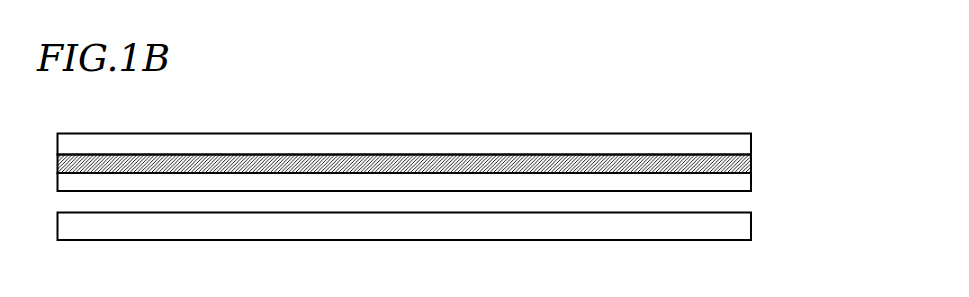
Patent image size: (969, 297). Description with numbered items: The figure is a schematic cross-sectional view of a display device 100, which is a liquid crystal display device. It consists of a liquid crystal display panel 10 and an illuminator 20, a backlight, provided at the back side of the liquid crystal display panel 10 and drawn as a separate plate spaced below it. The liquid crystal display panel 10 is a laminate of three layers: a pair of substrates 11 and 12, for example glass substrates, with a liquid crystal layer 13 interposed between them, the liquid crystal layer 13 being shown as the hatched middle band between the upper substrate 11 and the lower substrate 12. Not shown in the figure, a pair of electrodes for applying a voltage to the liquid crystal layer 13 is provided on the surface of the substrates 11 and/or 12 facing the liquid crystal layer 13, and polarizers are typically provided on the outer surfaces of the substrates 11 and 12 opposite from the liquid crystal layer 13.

The display device 100 is at (680, 115).
The liquid crystal display panel 10 is at (849, 129).
The substrate 11 is at (752, 145).
The liquid crystal layer 13 is at (752, 165).
The substrate 12 is at (752, 183).
The illuminator 20 is at (752, 226).